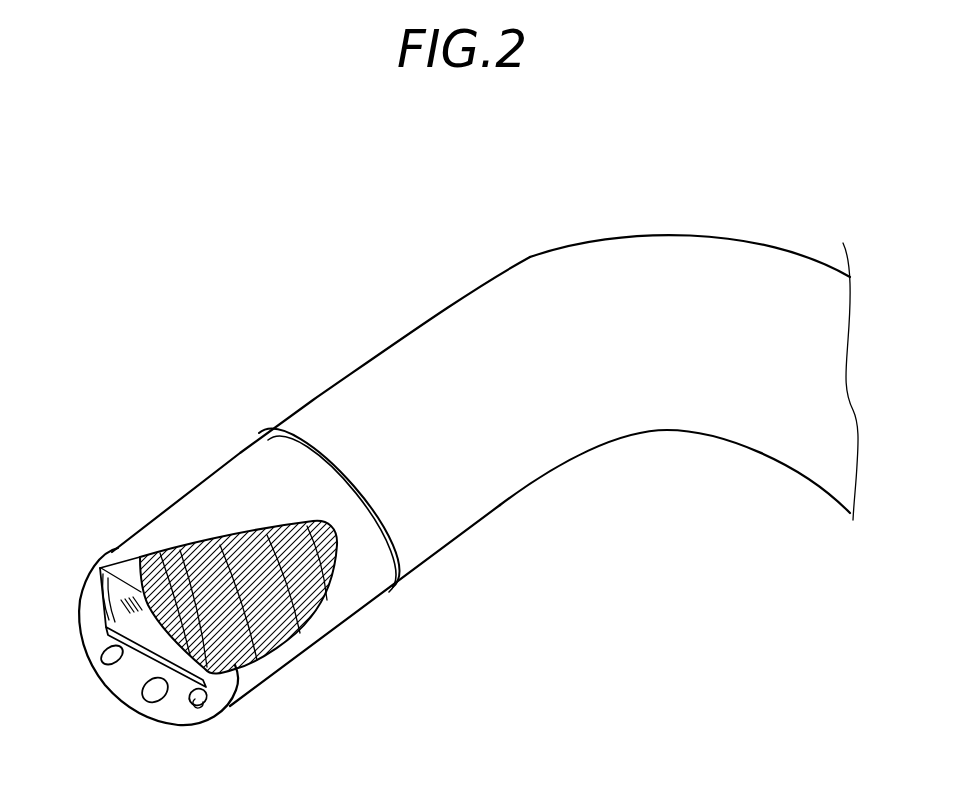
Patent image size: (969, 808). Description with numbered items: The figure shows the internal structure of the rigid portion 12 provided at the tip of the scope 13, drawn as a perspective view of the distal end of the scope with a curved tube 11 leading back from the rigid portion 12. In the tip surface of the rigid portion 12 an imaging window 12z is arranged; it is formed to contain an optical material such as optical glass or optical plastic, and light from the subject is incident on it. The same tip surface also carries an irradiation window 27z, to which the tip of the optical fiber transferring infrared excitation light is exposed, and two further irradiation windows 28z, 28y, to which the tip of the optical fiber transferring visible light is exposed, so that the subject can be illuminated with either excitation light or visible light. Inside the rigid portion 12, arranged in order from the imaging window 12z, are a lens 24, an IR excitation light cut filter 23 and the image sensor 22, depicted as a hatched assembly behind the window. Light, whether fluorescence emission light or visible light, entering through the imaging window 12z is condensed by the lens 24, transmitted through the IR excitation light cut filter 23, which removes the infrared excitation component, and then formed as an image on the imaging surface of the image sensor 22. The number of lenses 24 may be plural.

The insertion portion flexible tube 11 is at (560, 273).
The rigid portion 12 is at (186, 497).
The imaging window 12z is at (98, 575).
The scope 13 is at (274, 268).
The image sensor 22 is at (330, 587).
The IR excitation light cut filter 23 is at (297, 632).
The lens 24 is at (252, 661).
The irradiation window 27z is at (142, 703).
The irradiation window 28z is at (105, 663).
The irradiation window 28y is at (201, 707).